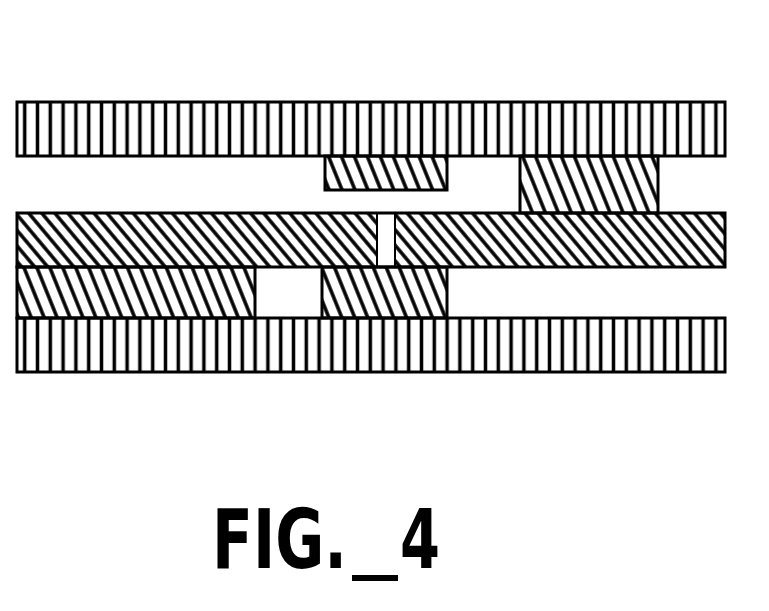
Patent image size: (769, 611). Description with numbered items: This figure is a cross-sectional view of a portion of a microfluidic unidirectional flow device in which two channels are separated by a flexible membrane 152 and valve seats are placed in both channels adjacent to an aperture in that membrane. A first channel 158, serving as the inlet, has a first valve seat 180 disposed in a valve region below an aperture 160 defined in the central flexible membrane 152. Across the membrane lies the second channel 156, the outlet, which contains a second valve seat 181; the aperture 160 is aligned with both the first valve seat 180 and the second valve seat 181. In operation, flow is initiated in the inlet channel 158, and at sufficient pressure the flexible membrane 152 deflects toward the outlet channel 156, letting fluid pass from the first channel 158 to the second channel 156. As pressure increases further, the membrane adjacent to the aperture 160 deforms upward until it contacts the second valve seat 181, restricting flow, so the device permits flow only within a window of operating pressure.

The flexible membrane 152 is at (493, 230).
The second channel 156 is at (88, 171).
The first channel 158 is at (662, 305).
The aperture 160 is at (383, 215).
The first valve seat 180 is at (322, 292).
The second valve seat 181 is at (448, 173).